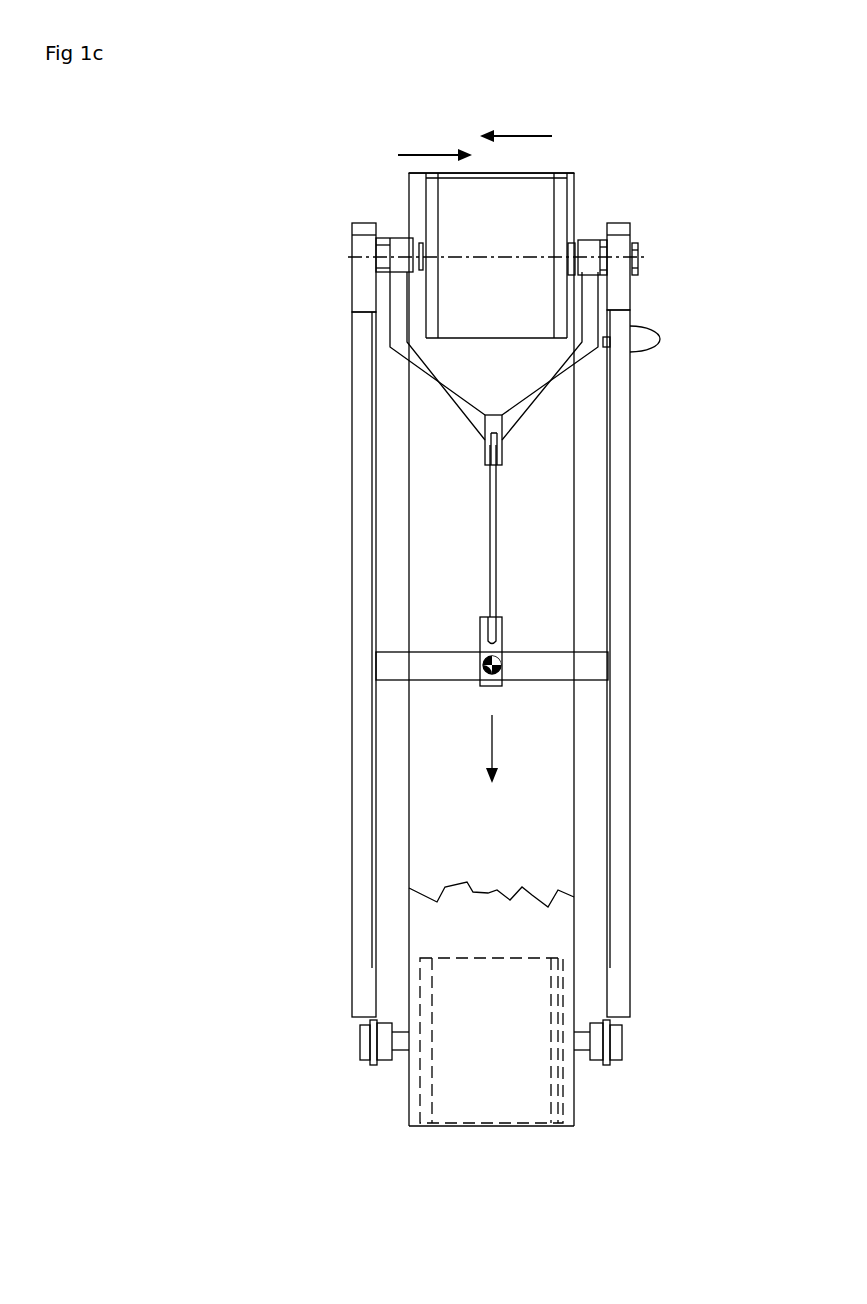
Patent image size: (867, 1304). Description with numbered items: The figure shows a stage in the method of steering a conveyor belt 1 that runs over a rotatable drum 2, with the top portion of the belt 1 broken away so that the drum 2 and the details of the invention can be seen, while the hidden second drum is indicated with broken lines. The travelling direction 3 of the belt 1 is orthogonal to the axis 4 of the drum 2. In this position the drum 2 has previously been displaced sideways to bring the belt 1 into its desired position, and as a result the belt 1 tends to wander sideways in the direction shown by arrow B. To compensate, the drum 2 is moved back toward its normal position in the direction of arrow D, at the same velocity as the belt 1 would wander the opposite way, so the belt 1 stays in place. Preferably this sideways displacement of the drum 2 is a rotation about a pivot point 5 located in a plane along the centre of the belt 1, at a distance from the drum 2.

The conveyor belt 1 is at (542, 525).
The rotatable drum 2 is at (538, 203).
The travelling direction 3 is at (497, 753).
The axis 4 is at (454, 255).
The pivot point 5 is at (500, 665).
The arrow B is at (428, 145).
The arrow D is at (528, 127).